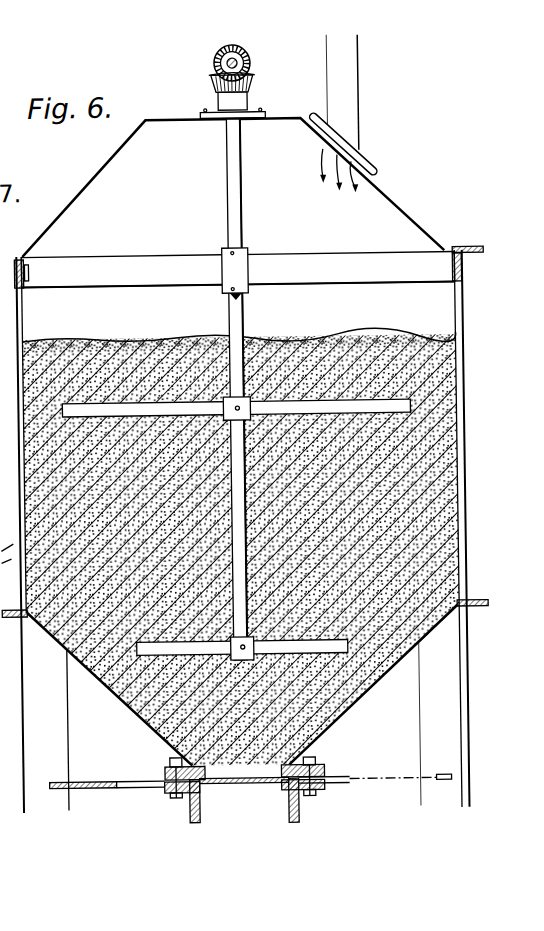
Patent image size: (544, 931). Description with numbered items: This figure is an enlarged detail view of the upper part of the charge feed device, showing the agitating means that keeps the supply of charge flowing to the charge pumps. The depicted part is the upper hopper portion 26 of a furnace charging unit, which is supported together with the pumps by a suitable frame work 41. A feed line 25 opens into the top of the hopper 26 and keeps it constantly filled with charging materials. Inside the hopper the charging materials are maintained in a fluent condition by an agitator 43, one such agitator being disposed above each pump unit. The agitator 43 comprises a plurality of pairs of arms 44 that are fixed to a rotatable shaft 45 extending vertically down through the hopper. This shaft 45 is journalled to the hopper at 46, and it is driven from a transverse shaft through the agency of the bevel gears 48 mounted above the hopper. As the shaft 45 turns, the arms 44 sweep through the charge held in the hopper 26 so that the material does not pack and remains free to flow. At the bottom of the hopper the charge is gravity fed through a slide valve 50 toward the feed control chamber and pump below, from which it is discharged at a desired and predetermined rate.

The feed line 25 is at (357, 102).
The upper hopper portion 26 is at (434, 318).
The frame work 41 is at (446, 673).
The agitator 43 is at (413, 400).
The pairs of arms 44 is at (377, 409).
The rotatable shaft 45 is at (239, 182).
The journal 46 is at (253, 58).
The bevel gears 48 is at (220, 82).
The slide valve 50 is at (103, 780).